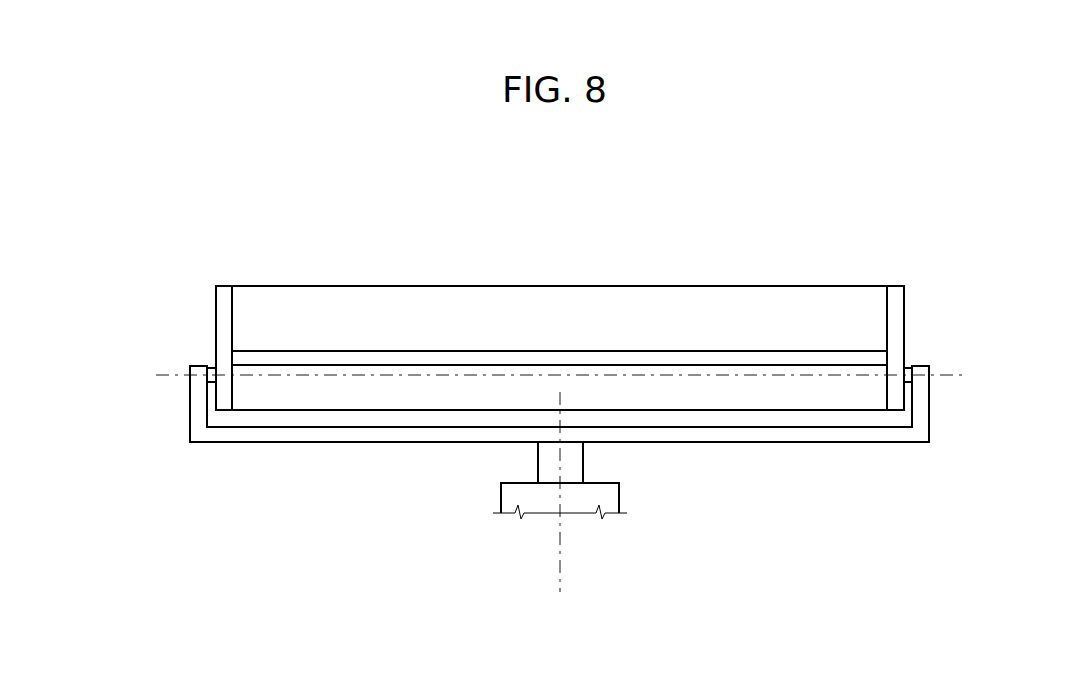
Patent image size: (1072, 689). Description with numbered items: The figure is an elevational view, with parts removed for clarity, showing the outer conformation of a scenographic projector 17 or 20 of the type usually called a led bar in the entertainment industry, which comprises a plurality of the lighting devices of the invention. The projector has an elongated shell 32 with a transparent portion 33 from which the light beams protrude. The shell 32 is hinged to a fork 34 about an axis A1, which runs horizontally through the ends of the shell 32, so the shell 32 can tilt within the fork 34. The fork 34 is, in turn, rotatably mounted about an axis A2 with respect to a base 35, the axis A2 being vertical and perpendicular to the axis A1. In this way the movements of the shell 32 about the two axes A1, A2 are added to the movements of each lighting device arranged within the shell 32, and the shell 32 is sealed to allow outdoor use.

The scenographic projector 17 is at (919, 202).
The scenographic projector 20 is at (602, 405).
The transparent portion 33 is at (773, 295).
The shell 32 is at (942, 314).
The fork 34 is at (802, 440).
The base 35 is at (608, 498).
The axis A1 is at (957, 370).
The axis A2 is at (558, 538).